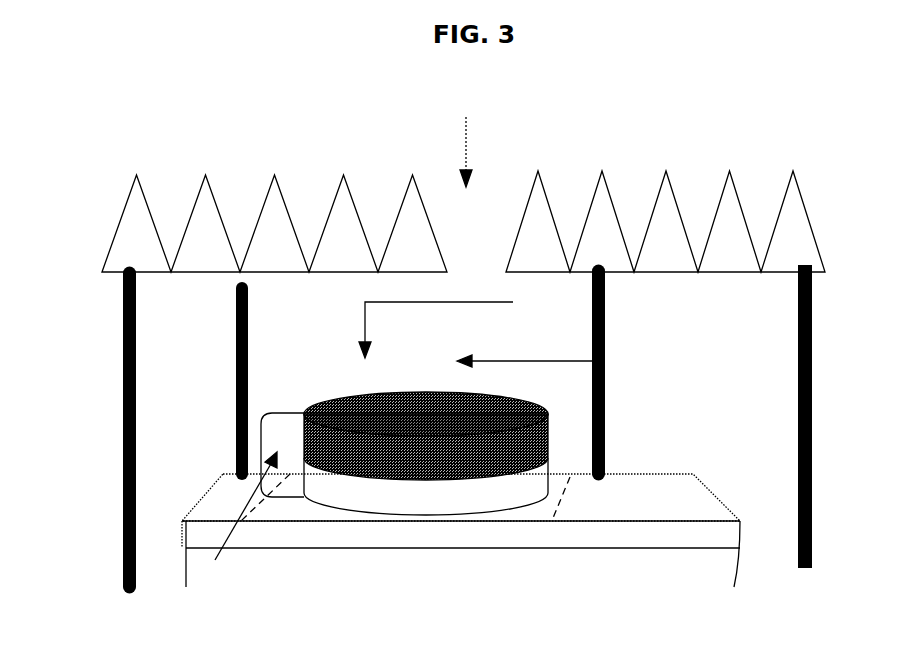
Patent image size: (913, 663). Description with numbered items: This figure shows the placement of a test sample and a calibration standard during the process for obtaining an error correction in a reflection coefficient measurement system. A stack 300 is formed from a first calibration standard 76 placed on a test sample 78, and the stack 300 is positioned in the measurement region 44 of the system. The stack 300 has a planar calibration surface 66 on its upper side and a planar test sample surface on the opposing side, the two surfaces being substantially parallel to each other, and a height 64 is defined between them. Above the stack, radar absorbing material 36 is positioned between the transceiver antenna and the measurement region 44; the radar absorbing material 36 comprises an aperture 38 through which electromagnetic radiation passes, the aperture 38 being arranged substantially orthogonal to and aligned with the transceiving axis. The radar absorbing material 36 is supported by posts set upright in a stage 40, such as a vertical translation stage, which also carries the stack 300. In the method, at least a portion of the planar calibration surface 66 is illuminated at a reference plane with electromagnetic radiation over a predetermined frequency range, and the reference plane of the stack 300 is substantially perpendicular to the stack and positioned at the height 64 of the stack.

The radar absorbing material 36 is at (808, 210).
The aperture 38 is at (468, 135).
The stage 40 is at (197, 510).
The measurement region 44 is at (563, 482).
The height 64 is at (240, 521).
The planar calibration surface 66 is at (410, 380).
The first calibration standard 76 is at (312, 435).
The test sample 78 is at (547, 488).
The stack 300 is at (465, 329).